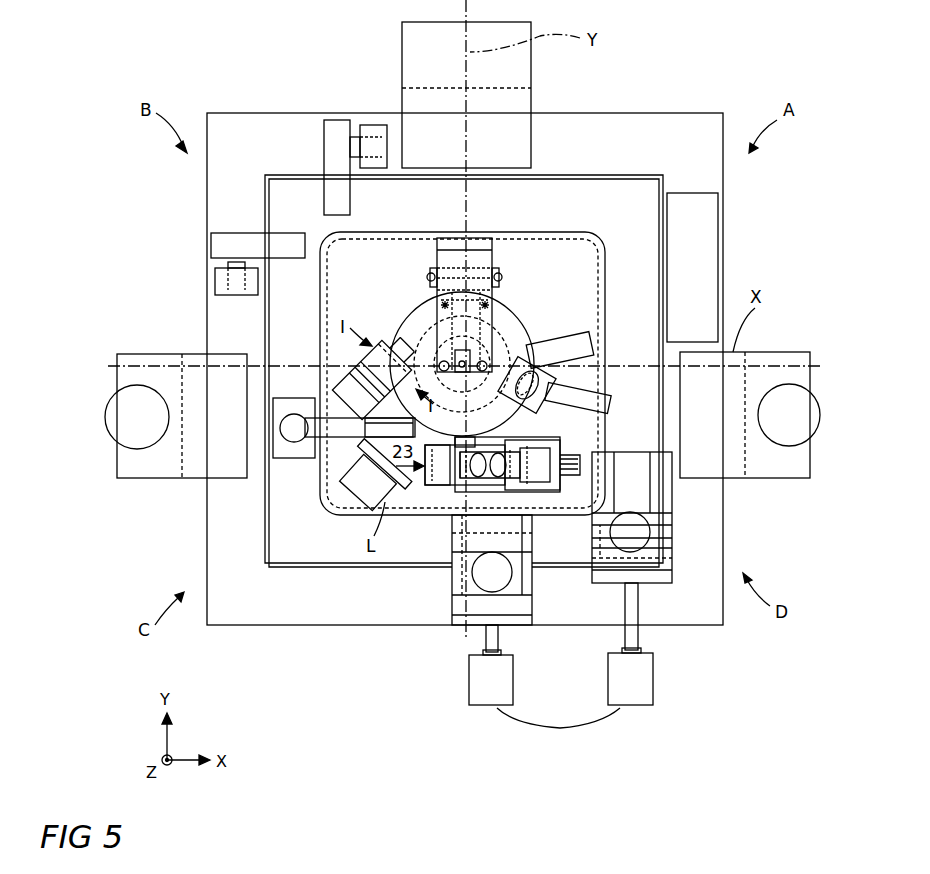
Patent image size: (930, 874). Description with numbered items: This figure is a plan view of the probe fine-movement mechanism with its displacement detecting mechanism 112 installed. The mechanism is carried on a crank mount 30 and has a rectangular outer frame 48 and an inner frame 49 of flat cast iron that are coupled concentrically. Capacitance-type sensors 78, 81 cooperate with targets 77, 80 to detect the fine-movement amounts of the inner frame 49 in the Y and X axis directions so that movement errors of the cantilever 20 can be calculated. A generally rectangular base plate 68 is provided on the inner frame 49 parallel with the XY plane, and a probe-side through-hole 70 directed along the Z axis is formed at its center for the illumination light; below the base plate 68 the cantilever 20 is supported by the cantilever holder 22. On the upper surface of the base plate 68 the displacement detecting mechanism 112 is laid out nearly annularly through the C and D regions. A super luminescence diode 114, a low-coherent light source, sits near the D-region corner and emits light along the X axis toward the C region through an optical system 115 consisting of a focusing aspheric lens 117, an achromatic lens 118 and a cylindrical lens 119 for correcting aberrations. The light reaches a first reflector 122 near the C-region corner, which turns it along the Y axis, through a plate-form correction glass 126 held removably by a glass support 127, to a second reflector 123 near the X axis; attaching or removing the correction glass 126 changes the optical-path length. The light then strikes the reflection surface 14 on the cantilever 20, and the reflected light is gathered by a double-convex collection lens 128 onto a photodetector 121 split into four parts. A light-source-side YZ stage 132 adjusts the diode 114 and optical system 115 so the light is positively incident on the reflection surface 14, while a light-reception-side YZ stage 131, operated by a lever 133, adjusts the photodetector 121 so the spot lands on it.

The reflection surface 14 is at (460, 362).
The cantilever 20 is at (412, 318).
The cantilever holder 22 is at (505, 312).
The crank mount 30 is at (405, 44).
The outer frame 48 is at (225, 625).
The inner frame 49 is at (268, 512).
The base plate 68 is at (578, 237).
The probe-side through-hole 70 is at (433, 300).
The target 77 is at (338, 128).
The capacitance-type sensor 78 is at (372, 130).
The target 80 is at (218, 246).
The capacitance-type sensor 81 is at (220, 283).
The displacement detecting mechanism 112 is at (333, 545).
The super luminescence diode (SLD) 114 is at (543, 492).
The optical system 115 is at (450, 495).
The focusing aspheric lens 117 is at (540, 442).
The achromatic lens 118 is at (478, 445).
The cylindrical lens 119 is at (437, 498).
The photodetector 121 is at (585, 350).
The first reflector 122 is at (345, 495).
The second reflector 123 is at (342, 360).
The correction glass 126 is at (322, 450).
The glass support 127 is at (352, 428).
The collection lens 128 is at (530, 340).
The light-reception-side YZ stage 131 is at (662, 575).
The light-source-side YZ stage 132 is at (452, 628).
The lever 133 is at (500, 574).